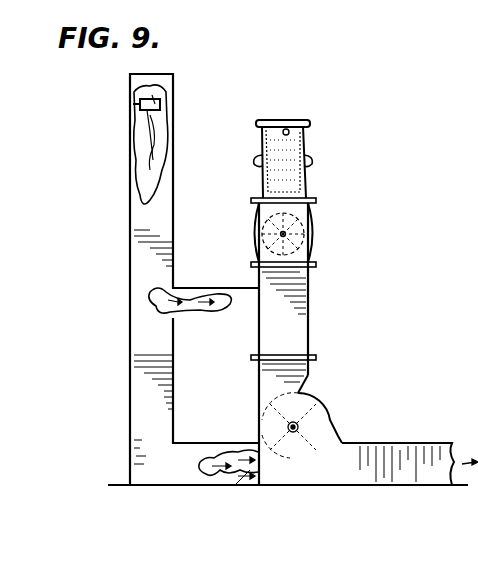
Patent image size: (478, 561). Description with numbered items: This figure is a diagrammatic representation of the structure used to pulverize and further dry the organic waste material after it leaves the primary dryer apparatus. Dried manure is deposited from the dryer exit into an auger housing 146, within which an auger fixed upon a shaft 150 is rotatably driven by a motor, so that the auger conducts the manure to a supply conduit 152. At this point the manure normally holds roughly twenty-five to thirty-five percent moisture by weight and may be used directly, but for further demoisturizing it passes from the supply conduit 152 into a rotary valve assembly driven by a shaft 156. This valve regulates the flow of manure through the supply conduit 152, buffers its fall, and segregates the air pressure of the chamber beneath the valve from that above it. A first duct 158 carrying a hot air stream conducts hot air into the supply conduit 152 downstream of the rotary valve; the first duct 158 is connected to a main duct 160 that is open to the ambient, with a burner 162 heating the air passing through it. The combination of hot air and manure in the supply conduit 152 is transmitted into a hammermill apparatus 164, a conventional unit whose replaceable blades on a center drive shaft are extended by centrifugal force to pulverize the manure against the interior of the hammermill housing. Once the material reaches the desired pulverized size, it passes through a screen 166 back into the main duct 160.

The auger housing 146 is at (303, 150).
The shaft 150 is at (306, 124).
The supply conduit 152 is at (306, 180).
The shaft 156 is at (318, 242).
The first duct 158 is at (246, 317).
The main duct 160 is at (168, 242).
The burner 162 is at (160, 104).
The hammermill apparatus 164 is at (318, 397).
The screen 166 is at (345, 438).